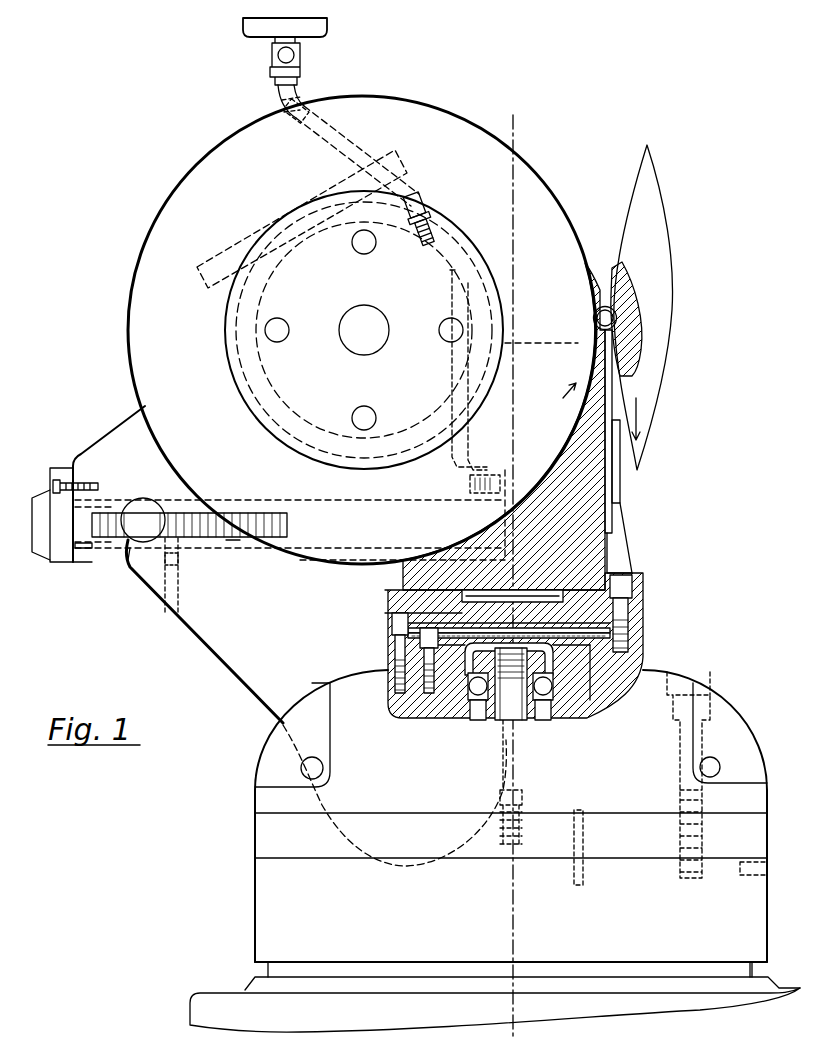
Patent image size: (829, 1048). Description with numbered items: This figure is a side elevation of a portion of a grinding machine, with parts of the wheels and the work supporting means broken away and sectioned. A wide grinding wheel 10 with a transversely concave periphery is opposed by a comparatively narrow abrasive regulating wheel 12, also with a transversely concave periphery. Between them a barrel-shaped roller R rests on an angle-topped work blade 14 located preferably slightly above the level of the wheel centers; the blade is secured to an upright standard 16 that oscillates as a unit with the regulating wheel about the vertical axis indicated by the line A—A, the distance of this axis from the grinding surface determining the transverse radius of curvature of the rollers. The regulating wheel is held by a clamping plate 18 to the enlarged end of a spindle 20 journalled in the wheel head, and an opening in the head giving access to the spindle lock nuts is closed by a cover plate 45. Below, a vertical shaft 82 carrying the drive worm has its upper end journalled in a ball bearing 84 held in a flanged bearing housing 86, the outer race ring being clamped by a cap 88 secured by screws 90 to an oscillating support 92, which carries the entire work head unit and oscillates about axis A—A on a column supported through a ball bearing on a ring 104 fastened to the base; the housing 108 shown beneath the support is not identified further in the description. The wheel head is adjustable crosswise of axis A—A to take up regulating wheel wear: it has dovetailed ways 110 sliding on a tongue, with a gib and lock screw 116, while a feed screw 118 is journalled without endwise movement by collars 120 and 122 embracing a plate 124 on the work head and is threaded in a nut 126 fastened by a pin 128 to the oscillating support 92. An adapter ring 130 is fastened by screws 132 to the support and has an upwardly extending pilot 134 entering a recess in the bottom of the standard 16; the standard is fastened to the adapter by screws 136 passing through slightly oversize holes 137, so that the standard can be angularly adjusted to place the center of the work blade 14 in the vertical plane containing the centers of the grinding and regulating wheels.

The grinding wheel 10 is at (644, 307).
The regulating wheel 12 is at (563, 229).
The work blade 14 is at (620, 393).
The standard 16 is at (582, 489).
The clamping plate 18 is at (364, 330).
The spindle 20 is at (348, 340).
The cover plate 45 is at (196, 272).
The vertical shaft 82 is at (517, 718).
The ball bearing 84 is at (474, 722).
The bearing housing 86 is at (580, 703).
The cap 88 is at (577, 650).
The screws 90 is at (433, 720).
The oscillating support 92 is at (411, 836).
The ring 104 is at (195, 1005).
The housing 108 is at (255, 907).
The dovetailed ways 110 is at (113, 515).
The lock screw 116 is at (143, 498).
The feed screw 118 is at (234, 545).
The collar 120 is at (44, 552).
The collar 122 is at (84, 550).
The plate 124 is at (63, 562).
The nut 126 is at (147, 560).
The pin 128 is at (180, 557).
The adapter ring 130 is at (385, 620).
The screws 132 is at (385, 638).
The pilot 134 is at (470, 592).
The screws 136 is at (640, 601).
The holes 137 is at (634, 570).
The roller R is at (605, 304).
The axis of oscillation A is at (511, 571).